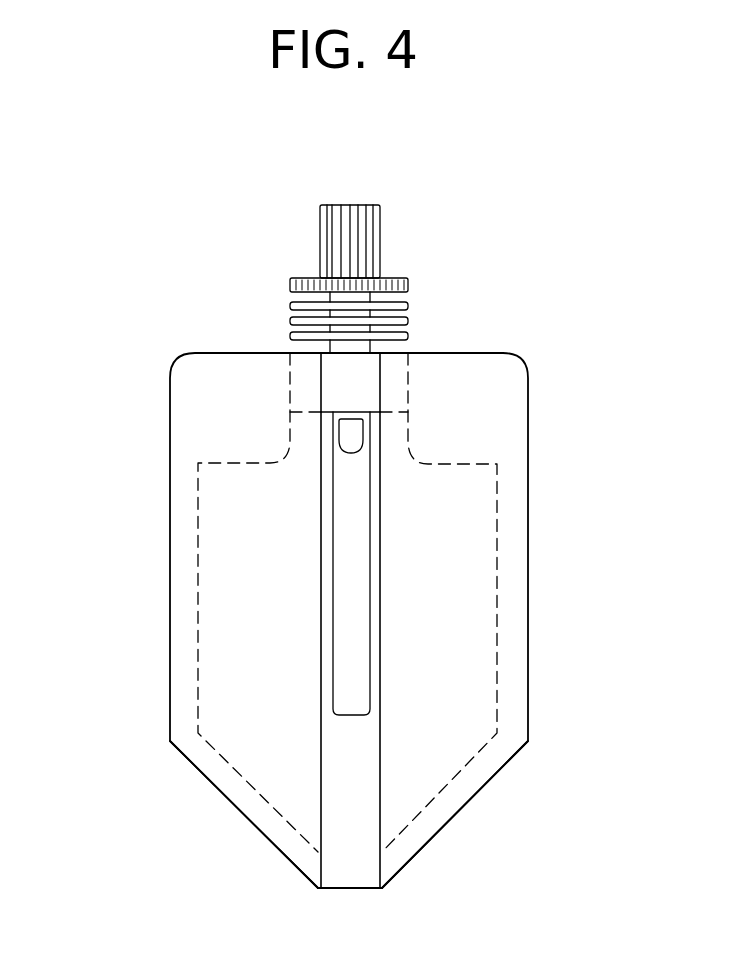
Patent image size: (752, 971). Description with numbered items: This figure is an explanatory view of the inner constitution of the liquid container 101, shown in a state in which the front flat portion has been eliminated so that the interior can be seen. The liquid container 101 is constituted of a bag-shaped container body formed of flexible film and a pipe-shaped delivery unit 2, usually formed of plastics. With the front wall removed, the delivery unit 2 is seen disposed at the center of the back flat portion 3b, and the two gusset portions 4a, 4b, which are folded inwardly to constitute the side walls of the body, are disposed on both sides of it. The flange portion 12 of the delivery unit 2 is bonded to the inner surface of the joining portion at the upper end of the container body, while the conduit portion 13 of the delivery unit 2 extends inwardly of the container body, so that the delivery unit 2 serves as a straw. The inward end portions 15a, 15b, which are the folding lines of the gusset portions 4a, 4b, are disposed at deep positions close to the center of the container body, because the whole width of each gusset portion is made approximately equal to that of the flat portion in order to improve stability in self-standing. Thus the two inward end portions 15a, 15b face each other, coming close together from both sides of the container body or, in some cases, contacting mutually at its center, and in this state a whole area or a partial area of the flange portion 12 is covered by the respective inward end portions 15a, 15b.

The liquid container 101 is at (107, 182).
The delivery unit 2 is at (307, 215).
The flange portion 12 is at (400, 385).
The gusset portion 4a is at (455, 588).
The gusset portion 4b is at (233, 585).
The inward end portion 15a is at (380, 673).
The inward end portion 15b is at (321, 656).
The conduit portion 13 is at (345, 695).
The back flat portion 3b is at (350, 870).